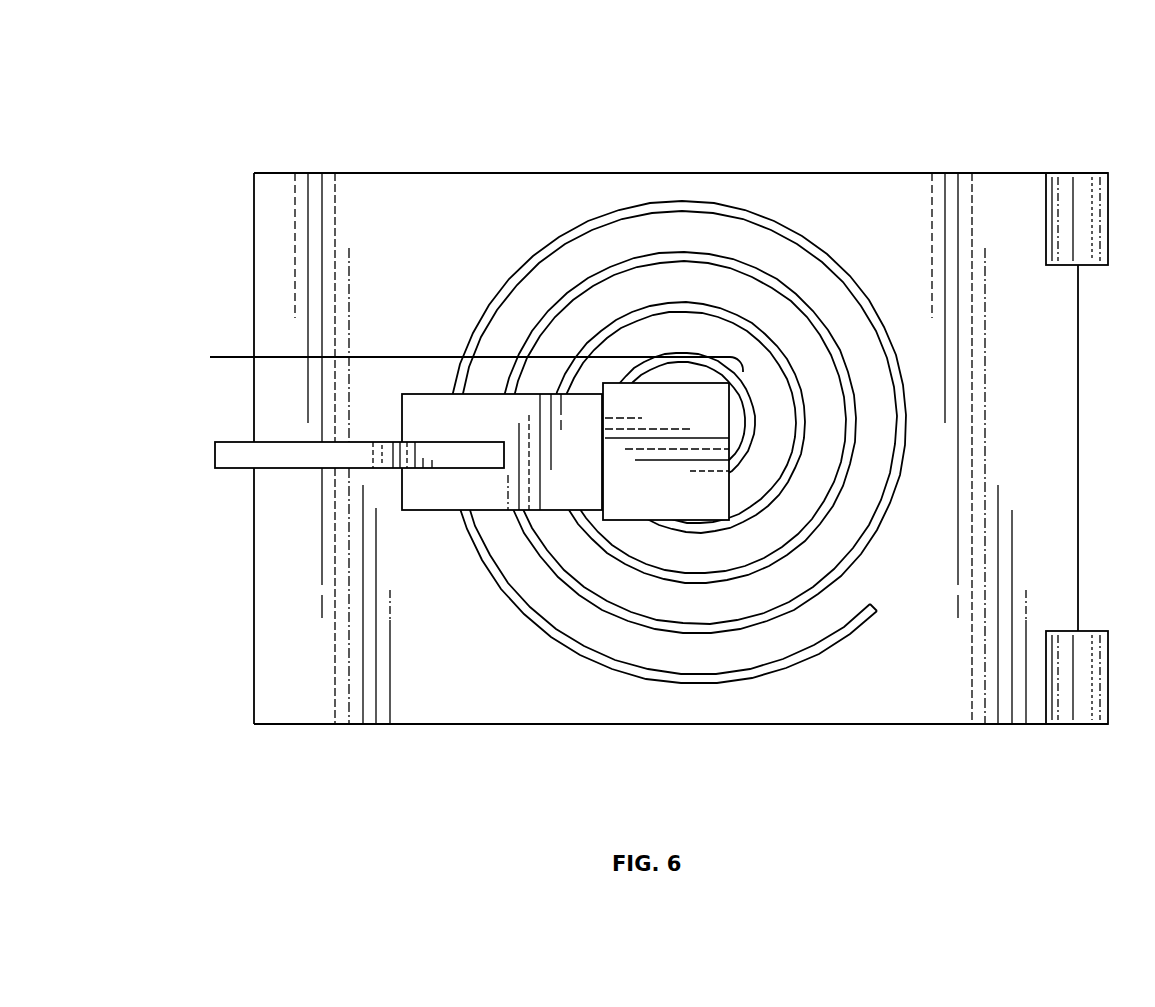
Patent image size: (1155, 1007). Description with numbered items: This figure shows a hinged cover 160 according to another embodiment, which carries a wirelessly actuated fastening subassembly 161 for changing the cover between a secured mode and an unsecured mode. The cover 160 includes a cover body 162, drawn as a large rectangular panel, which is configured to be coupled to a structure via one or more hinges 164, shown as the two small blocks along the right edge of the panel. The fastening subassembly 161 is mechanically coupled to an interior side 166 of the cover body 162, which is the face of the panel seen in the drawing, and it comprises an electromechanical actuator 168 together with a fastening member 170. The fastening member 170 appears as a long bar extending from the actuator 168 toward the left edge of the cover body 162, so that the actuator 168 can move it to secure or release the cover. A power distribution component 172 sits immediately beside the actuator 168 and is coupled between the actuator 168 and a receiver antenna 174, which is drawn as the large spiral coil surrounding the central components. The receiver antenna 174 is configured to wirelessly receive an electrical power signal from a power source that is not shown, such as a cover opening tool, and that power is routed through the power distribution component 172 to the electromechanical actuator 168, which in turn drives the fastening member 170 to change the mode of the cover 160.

The hinged cover 160 is at (605, 394).
The wirelessly actuated fastening subassembly 161 is at (402, 357).
The cover body 162 is at (433, 198).
The hinge 164 is at (1108, 202).
The interior side 166 is at (332, 193).
The electromechanical actuator 168 is at (553, 498).
The fastening member 170 is at (273, 457).
The power distribution component 172 is at (673, 498).
The receiver antenna 174 is at (803, 660).